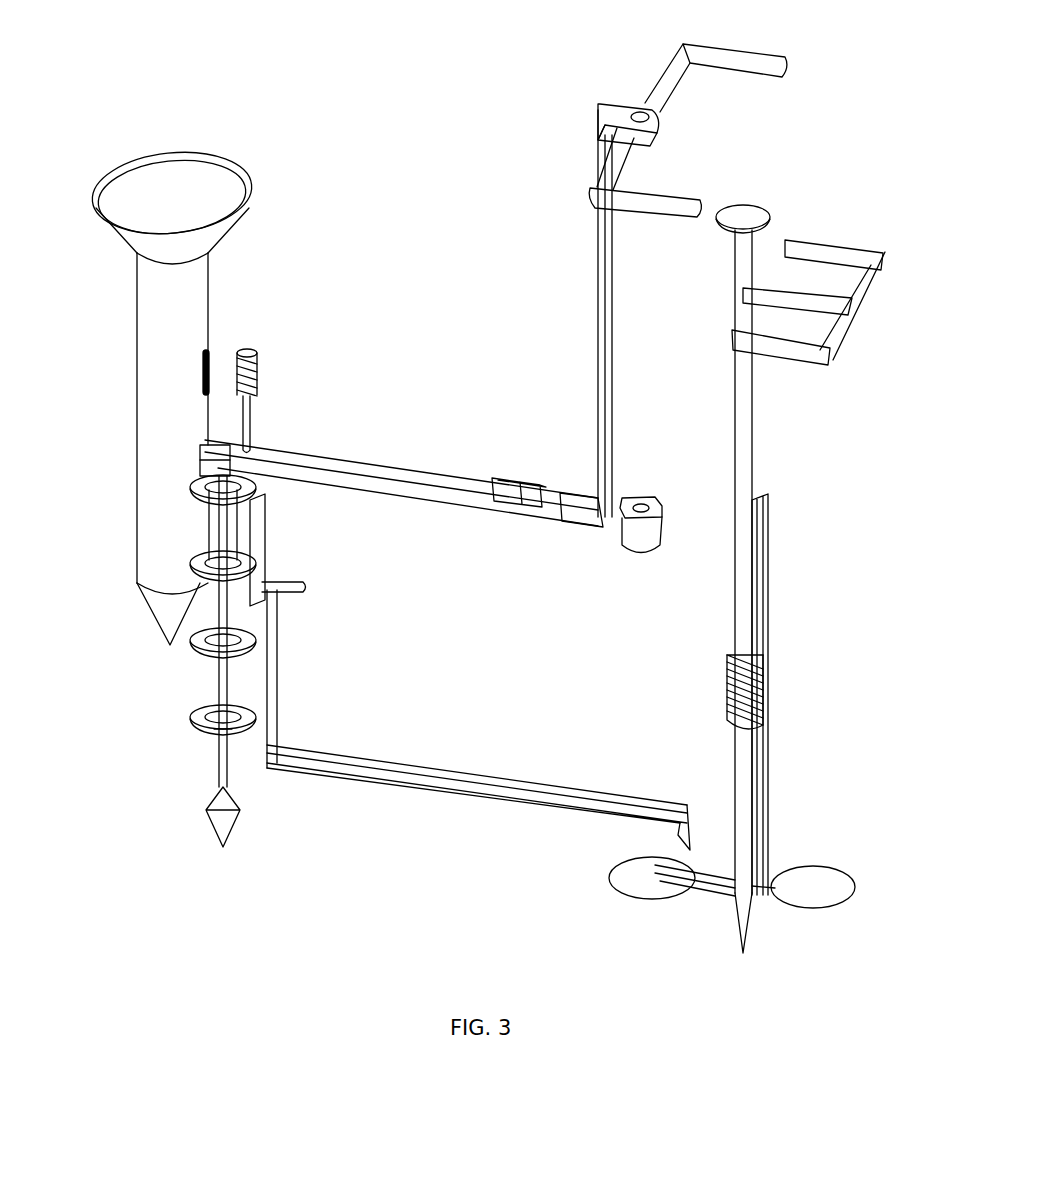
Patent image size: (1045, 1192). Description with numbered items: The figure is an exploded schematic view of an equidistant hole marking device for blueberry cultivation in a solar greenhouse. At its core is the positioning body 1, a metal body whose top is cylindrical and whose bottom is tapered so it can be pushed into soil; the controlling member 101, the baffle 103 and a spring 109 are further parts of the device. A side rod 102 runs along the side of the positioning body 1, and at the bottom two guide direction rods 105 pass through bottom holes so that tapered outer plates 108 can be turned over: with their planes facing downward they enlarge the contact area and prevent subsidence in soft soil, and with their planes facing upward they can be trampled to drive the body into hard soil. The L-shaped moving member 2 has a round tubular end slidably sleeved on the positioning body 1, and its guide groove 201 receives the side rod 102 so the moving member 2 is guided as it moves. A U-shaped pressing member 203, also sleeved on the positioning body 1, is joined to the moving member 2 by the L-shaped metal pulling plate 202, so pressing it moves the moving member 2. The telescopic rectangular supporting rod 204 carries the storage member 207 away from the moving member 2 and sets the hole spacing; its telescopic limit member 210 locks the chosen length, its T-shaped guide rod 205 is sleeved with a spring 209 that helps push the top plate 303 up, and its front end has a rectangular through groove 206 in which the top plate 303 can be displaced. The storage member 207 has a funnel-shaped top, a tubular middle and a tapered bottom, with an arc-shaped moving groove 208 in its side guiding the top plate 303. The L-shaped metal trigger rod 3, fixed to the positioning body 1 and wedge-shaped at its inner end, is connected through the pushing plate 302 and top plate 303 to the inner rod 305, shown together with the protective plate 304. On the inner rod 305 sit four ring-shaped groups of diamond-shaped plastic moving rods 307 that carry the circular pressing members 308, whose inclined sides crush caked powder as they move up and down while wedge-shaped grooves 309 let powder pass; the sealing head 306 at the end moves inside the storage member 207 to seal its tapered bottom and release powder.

The positioning body 1 is at (740, 575).
The controlling member 101 is at (848, 313).
The side rod 102 is at (766, 598).
The baffle 103 is at (728, 720).
The guide direction rods 105 is at (710, 887).
The outer plates 108 is at (807, 882).
The spring 109 is at (762, 698).
The moving member 2 is at (603, 523).
The guide groove 201 is at (657, 553).
The pulling plate 202 is at (598, 405).
The pressing member 203 is at (623, 212).
The supporting rod 204 is at (462, 488).
The guide rod 205 is at (252, 428).
The through groove 206 is at (217, 449).
The storage member 207 is at (137, 340).
The moving groove 208 is at (213, 365).
The spring 209 is at (257, 380).
The telescopic limit member 210 is at (513, 480).
The trigger rod 3 is at (605, 813).
The pushing plate 302 is at (480, 775).
The top plate 303 is at (280, 650).
The protective plate 304 is at (262, 545).
The inner rod 305 is at (218, 688).
The sealing head 306 is at (225, 810).
The moving rods 307 is at (205, 725).
The circular pressing members 308 is at (220, 738).
The wedge-shaped grooves 309 is at (200, 648).